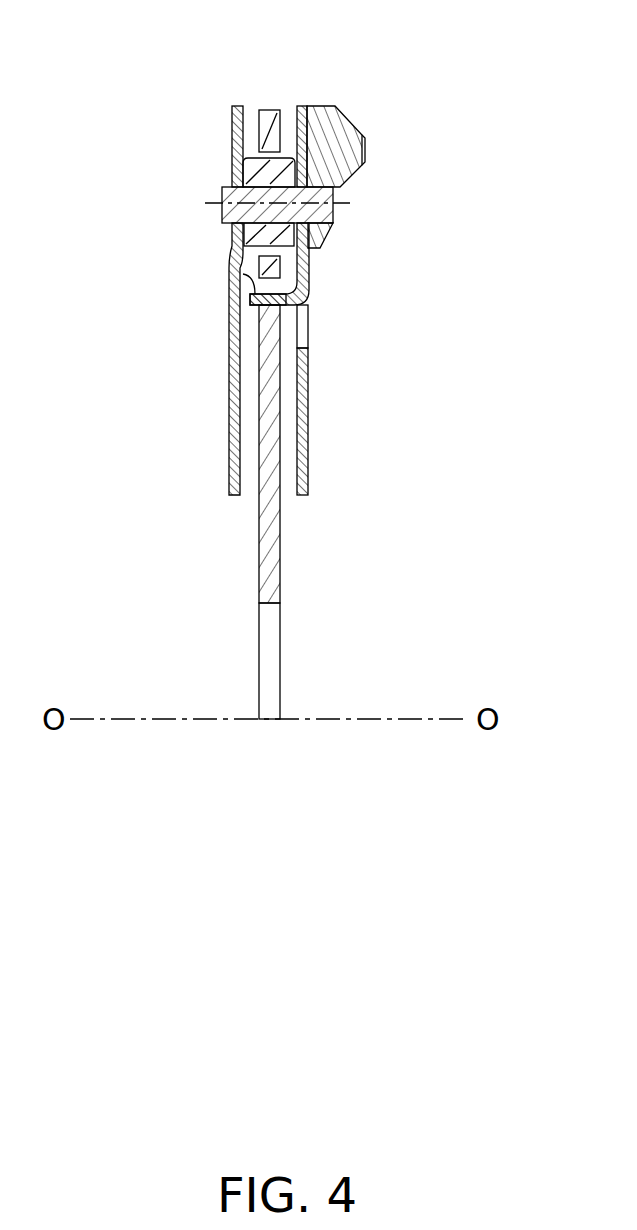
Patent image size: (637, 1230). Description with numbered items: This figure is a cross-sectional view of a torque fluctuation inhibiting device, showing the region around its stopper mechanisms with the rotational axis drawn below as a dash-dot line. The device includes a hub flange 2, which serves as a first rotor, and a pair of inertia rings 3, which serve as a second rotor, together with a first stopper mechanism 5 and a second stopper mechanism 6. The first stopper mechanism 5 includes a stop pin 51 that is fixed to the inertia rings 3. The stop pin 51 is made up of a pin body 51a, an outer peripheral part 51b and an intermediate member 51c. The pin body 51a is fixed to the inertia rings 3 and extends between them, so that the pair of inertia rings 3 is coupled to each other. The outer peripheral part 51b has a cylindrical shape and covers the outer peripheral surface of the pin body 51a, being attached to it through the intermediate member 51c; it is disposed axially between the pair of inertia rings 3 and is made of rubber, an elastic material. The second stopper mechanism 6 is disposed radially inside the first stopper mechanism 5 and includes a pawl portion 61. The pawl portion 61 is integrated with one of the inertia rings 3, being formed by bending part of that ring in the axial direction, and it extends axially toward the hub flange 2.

The hub flange 2 is at (282, 533).
The inertia rings 3 is at (336, 106).
The first stopper mechanism 5 is at (215, 156).
The stop pin 51 is at (215, 156).
The pin body 51a is at (220, 205).
The outer peripheral part 51b is at (253, 148).
The intermediate member 51c is at (243, 173).
The second stopper mechanism 6 is at (282, 265).
The pawl portion 61 is at (229, 282).